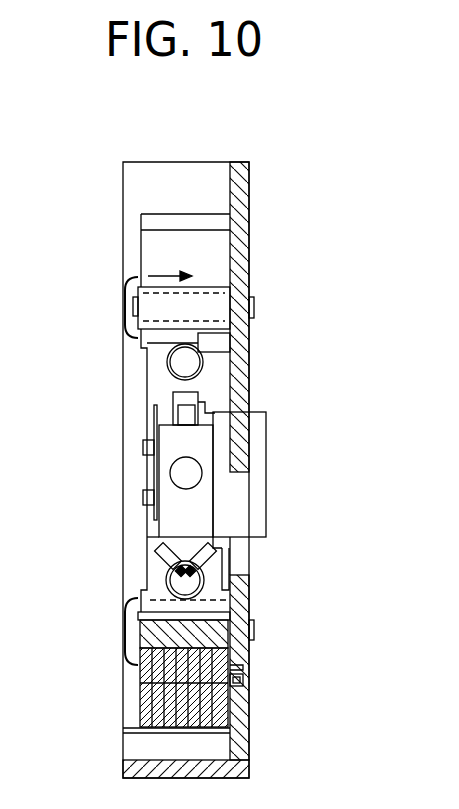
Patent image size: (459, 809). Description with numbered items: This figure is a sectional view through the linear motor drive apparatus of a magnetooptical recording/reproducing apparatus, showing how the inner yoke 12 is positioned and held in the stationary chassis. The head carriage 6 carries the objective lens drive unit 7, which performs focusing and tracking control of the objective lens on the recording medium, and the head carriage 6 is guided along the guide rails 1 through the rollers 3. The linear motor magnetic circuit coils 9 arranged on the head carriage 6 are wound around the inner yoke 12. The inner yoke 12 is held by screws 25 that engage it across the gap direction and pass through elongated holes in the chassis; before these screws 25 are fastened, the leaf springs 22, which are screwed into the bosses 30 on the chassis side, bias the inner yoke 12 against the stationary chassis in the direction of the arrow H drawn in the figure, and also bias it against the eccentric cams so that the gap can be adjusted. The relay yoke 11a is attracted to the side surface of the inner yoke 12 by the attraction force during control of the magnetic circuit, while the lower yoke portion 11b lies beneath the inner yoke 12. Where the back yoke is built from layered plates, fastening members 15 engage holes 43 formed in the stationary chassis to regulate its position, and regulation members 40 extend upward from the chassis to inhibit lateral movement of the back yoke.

The guide rails 1 is at (165, 572).
The rollers 3 is at (218, 567).
The head carriage 6 is at (173, 520).
The objective lens drive unit 7 is at (255, 495).
The linear motor magnetic circuit coils 9 is at (128, 328).
The relay yoke 11a is at (220, 258).
The lower frame portion 11b is at (150, 707).
The inner yoke 12 is at (150, 634).
The fastening members 15 is at (240, 683).
The leaf springs 22 is at (130, 279).
The screws 25 is at (252, 318).
The bosses 30 is at (205, 300).
The regulation members 40 is at (220, 757).
The holes 43 is at (233, 667).